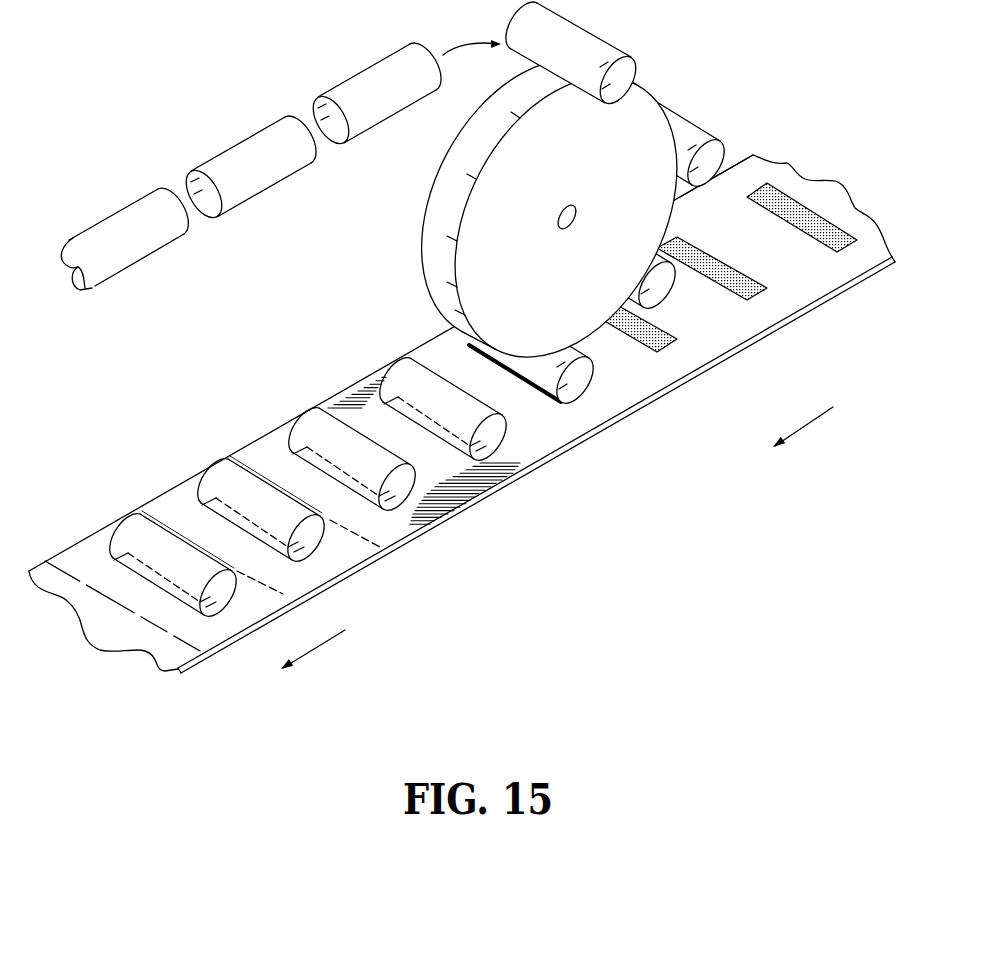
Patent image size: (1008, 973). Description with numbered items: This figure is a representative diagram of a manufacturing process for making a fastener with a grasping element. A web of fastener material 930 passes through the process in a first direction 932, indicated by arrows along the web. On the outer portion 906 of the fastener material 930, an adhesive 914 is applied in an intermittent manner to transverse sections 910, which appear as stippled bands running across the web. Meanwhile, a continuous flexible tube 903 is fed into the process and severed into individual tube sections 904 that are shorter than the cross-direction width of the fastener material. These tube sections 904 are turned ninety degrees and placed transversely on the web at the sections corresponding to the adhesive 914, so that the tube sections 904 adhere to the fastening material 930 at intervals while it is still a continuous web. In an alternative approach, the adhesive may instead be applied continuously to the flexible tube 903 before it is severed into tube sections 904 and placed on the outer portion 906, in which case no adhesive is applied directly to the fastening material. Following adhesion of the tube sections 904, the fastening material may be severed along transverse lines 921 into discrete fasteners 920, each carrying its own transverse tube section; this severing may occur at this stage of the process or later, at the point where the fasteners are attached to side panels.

The continuous flexible tube 903 is at (113, 214).
The tube sections 904 is at (252, 152).
The outer portion 906 is at (827, 189).
The transverse sections 910 is at (765, 292).
The adhesive 914 is at (847, 242).
The discrete fasteners 920 is at (90, 556).
The transverse lines 921 is at (250, 472).
The web of fastener material 930 is at (757, 166).
The first direction 932 is at (800, 431).